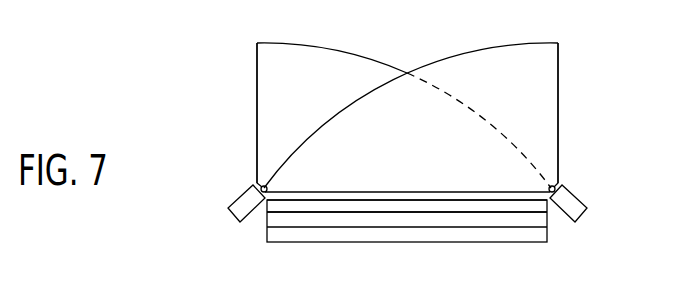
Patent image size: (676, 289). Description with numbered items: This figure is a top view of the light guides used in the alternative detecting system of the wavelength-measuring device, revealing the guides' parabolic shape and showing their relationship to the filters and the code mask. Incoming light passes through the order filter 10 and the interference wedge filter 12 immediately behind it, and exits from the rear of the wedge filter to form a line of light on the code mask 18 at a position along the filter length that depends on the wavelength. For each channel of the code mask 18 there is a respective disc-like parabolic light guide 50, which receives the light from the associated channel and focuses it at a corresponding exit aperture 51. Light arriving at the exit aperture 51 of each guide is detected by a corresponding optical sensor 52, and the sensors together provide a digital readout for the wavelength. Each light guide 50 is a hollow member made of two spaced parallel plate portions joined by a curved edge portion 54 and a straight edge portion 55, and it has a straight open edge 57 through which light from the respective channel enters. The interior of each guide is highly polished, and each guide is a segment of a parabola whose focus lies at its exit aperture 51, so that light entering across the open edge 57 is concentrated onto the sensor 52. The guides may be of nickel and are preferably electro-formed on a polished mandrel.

The order filter 10 is at (316, 235).
The interference wedge filter 12 is at (403, 218).
The code mask 18 is at (497, 205).
The parabolic light guide 50 is at (264, 73).
The exit aperture 51 is at (259, 185).
The optical sensor 52 is at (236, 206).
The curved edge portion 54 is at (440, 62).
The straight edge portion 55 is at (257, 123).
The straight open edge 57 is at (402, 192).